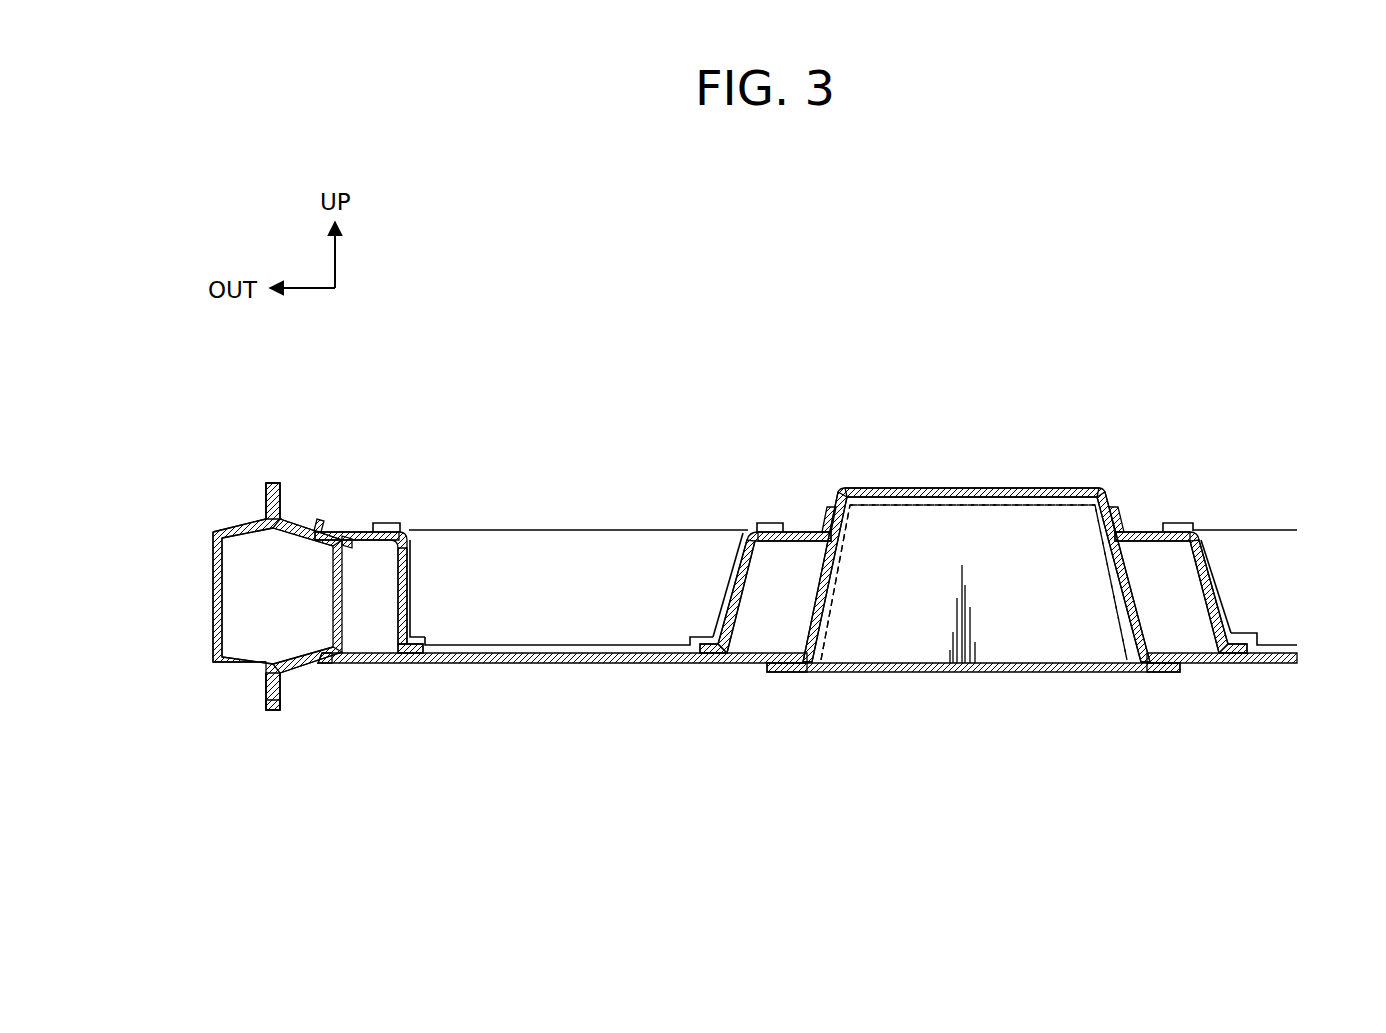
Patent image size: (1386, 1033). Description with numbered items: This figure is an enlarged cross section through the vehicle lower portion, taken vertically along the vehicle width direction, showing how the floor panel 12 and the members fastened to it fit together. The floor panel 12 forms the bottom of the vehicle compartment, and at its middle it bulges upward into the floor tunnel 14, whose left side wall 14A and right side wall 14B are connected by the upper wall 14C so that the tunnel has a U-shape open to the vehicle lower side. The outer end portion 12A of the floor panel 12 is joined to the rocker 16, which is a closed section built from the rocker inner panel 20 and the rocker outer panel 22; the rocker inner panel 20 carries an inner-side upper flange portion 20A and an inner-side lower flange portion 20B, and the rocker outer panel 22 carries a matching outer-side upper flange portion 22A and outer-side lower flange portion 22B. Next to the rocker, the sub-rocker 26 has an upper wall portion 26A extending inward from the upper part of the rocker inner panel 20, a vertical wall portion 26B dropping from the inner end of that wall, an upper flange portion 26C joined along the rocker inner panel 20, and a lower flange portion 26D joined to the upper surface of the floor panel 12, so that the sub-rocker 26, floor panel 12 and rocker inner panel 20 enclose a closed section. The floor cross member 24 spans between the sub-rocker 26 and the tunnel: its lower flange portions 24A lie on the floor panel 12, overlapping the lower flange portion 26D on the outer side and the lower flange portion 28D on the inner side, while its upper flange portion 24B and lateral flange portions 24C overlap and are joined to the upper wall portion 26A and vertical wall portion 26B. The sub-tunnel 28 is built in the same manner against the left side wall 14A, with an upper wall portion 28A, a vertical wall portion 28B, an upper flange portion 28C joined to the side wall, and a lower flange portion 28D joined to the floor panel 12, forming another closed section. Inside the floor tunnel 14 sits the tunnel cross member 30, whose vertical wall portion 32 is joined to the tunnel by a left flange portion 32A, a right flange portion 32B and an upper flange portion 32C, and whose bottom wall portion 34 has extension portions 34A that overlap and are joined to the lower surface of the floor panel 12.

The floor panel 12 is at (807, 720).
The end portion of floor panel 12A is at (322, 667).
The floor tunnel 14 is at (982, 498).
The left side wall 14A is at (1132, 582).
The right side wall 14B is at (813, 578).
The upper wall 14C is at (955, 487).
The rocker 16 is at (274, 720).
The rocker inner panel 20 is at (338, 604).
The inner-side upper flange portion 20A is at (282, 500).
The inner-side lower flange portion 20B is at (282, 698).
The rocker outer panel 22 is at (233, 579).
The outer-side upper flange portion 22A is at (265, 513).
The outer-side lower flange portion 22B is at (265, 698).
The floor cross member 24 is at (841, 516).
The lower flange portion 24A is at (556, 644).
The upper flange portion 24B is at (388, 522).
The lateral flange portion 24C is at (412, 568).
The sub-rocker 26 is at (443, 563).
The upper wall portion 26A is at (355, 531).
The vertical wall portion 26B is at (410, 607).
The upper flange portion 26C is at (327, 527).
The lower flange portion 26D is at (433, 632).
The sub-tunnel 28 is at (987, 502).
The upper wall portion 28A is at (804, 531).
The vertical wall portion 28B is at (730, 583).
The upper flange portion 28C is at (833, 507).
The lower flange portion 28D is at (699, 637).
The tunnel cross member 30 is at (974, 650).
The vertical wall portion 32 is at (974, 650).
The left flange portion 32A is at (1105, 577).
The right flange portion 32B is at (843, 568).
The upper flange portion 32C is at (972, 507).
The bottom wall portion 34 is at (969, 731).
The extension portion 34A is at (777, 673).